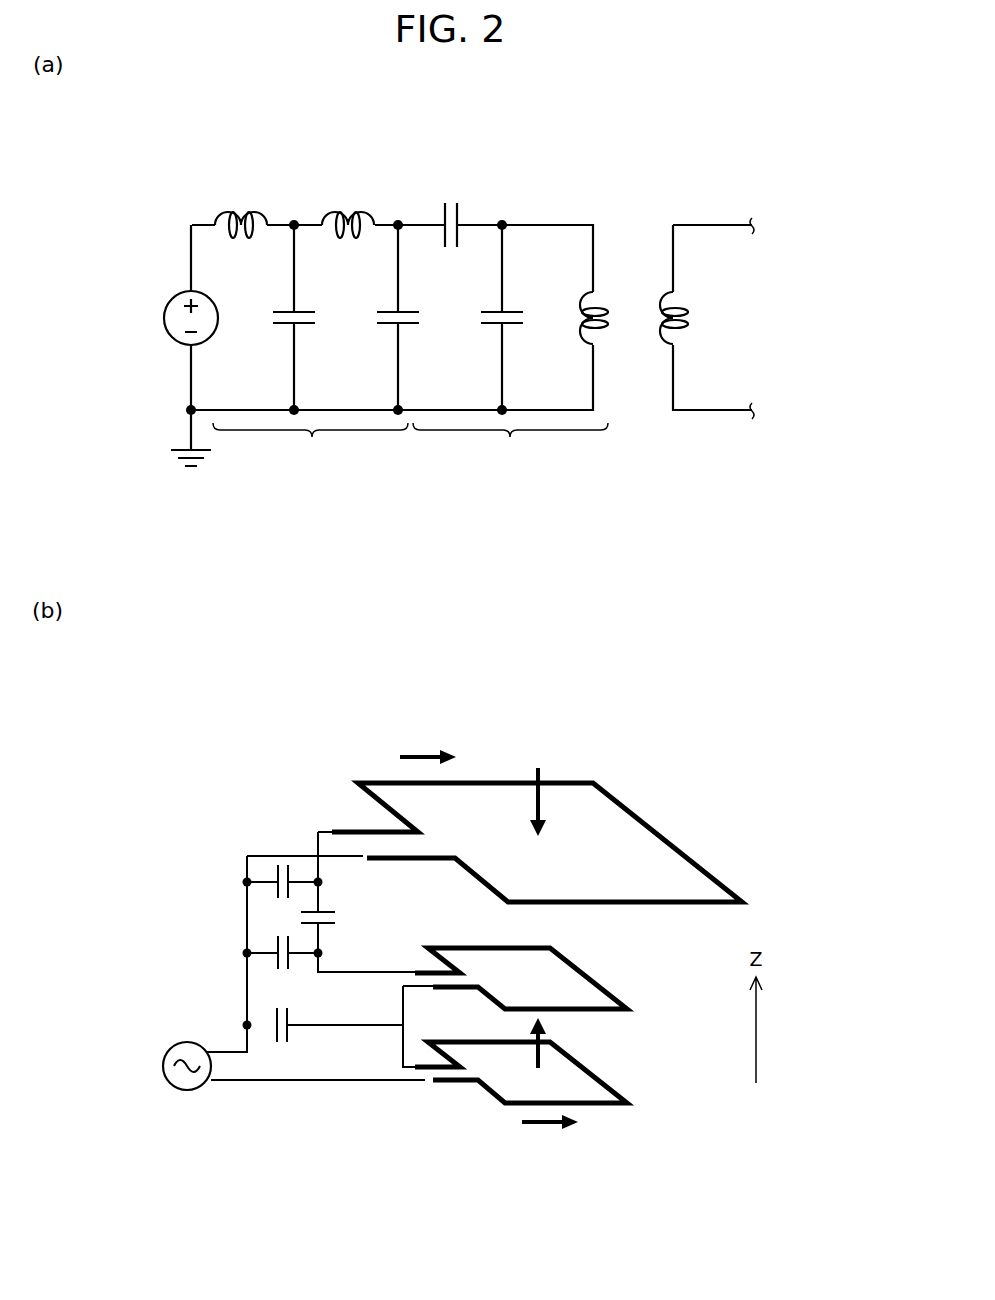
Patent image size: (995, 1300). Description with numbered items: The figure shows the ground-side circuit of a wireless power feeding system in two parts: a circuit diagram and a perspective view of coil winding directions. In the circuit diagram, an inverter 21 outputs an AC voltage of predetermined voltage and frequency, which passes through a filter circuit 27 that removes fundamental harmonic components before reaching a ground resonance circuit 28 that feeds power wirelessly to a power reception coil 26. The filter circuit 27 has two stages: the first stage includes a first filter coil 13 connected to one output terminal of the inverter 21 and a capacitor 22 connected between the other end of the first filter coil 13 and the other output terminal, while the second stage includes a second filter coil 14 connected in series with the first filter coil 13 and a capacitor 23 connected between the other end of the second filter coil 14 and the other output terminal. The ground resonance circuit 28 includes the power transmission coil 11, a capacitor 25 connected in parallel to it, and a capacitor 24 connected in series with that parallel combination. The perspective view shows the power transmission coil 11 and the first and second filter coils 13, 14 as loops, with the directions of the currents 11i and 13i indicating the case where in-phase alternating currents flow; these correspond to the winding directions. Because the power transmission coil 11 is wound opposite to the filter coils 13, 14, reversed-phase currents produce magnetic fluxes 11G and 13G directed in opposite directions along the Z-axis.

The power transmission coil 11 is at (597, 291).
The first filter coil 13 is at (245, 210).
The second filter coil 14 is at (353, 210).
The inverter 21 is at (168, 303).
The capacitor 22 is at (299, 310).
The capacitor 23 is at (404, 310).
The capacitor 24 is at (460, 212).
The capacitor 25 is at (507, 310).
The power reception coil 26 is at (660, 292).
The filter circuit 27 is at (310, 447).
The ground resonance circuit 28 is at (510, 447).
The current 11i is at (418, 752).
The current 13i is at (537, 1128).
The magnetic flux 11G is at (541, 792).
The magnetic flux 13G is at (541, 1060).